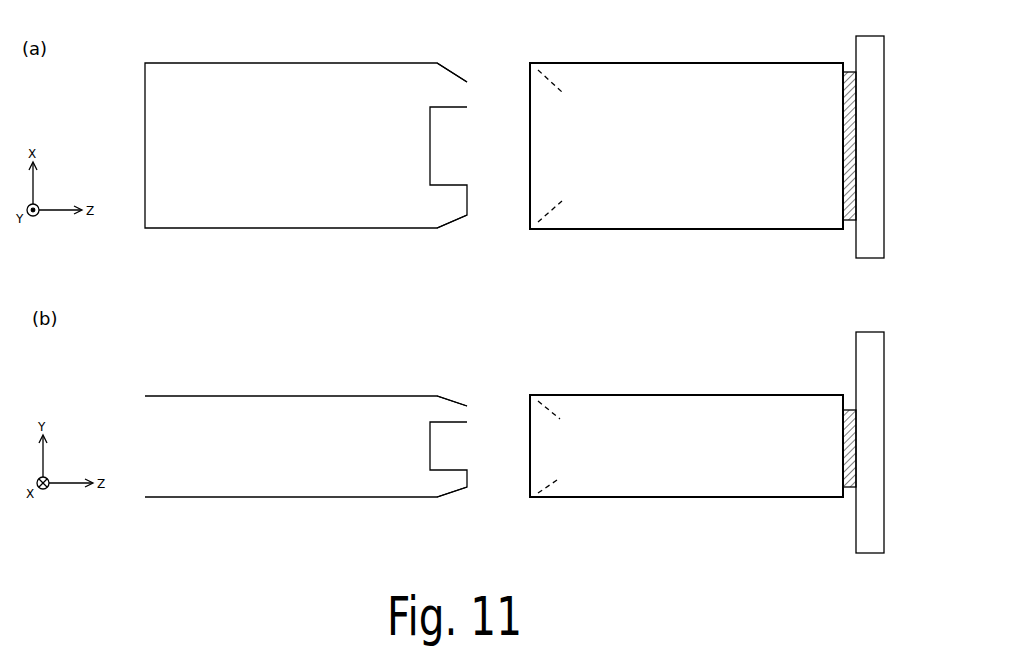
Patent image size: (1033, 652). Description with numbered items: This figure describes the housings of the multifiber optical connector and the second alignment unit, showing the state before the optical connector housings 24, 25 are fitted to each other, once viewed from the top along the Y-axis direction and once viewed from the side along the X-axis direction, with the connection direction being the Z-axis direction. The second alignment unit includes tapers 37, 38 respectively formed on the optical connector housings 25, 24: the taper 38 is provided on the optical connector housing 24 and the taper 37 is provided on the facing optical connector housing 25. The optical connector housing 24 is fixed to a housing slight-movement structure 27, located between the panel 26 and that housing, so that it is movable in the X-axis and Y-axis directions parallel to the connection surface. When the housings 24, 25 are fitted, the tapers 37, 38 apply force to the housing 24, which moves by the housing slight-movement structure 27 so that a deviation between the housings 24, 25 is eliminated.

The optical connector housing 24 is at (701, 63).
The optical connector housing 25 is at (205, 63).
The panel 26 is at (871, 36).
The housing slight-movement structure 27 is at (854, 71).
The taper 37 is at (447, 73).
The taper 38 is at (556, 84).